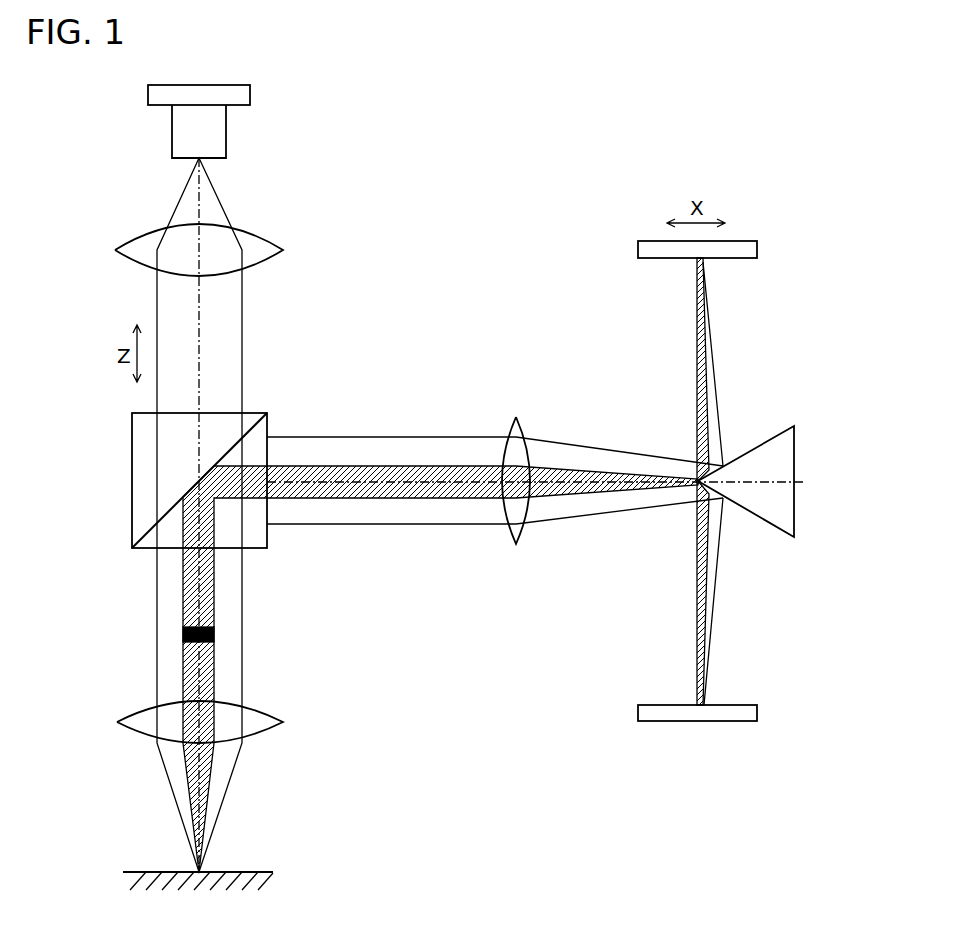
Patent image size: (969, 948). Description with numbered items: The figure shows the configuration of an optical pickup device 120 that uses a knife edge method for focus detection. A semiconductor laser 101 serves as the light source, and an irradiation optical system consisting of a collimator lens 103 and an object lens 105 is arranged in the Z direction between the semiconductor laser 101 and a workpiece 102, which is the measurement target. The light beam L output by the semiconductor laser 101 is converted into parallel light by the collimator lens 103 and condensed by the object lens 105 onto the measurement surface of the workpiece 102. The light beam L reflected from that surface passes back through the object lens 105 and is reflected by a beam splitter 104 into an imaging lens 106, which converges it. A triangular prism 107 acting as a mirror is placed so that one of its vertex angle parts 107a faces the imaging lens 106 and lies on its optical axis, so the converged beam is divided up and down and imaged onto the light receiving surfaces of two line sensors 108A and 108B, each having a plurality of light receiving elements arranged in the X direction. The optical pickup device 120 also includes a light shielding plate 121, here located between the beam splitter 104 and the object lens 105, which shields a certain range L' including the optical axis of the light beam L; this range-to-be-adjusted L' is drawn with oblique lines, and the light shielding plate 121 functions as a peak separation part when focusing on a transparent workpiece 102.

The semiconductor laser 101 is at (250, 95).
The workpiece 102 is at (272, 882).
The collimator lens 103 is at (283, 250).
The beam splitter 104 is at (132, 472).
The object lens 105 is at (283, 722).
The imaging lens 106 is at (517, 417).
The triangular prism 107 is at (795, 459).
The vertex angle part 107a is at (697, 483).
The line sensor 108A is at (758, 250).
The line sensor 108B is at (758, 713).
The optical pickup device 120 is at (493, 157).
The light shielding plate 121 is at (215, 636).
The light beam L is at (412, 515).
The range-to-be-adjusted L' is at (412, 565).